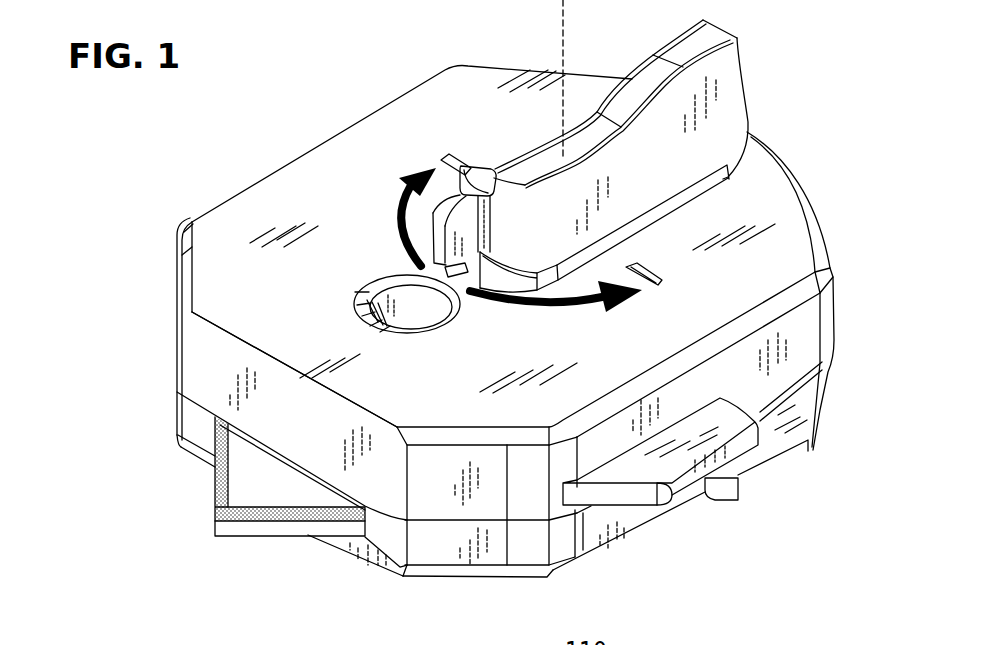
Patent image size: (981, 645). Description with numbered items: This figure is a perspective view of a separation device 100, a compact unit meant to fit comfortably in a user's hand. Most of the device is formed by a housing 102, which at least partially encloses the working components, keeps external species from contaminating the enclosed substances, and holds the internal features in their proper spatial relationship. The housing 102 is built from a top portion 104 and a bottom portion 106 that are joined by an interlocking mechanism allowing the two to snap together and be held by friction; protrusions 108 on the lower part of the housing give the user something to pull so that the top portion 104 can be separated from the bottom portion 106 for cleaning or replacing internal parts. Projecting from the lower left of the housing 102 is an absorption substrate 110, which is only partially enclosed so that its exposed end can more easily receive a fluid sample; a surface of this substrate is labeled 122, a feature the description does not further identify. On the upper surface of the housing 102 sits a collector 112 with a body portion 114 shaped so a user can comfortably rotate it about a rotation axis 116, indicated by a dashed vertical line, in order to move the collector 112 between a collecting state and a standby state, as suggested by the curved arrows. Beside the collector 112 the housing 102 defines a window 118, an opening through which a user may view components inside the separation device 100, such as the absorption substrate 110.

The separation device 100 is at (270, 112).
The housing 102 is at (146, 276).
The top portion 104 is at (424, 102).
The bottom portion 106 is at (434, 553).
The protrusions 108 is at (683, 486).
The absorption substrate 110 is at (214, 492).
The collector 112 is at (752, 80).
The body portion 114 is at (720, 113).
The rotation axis 116 is at (563, 13).
The window 118 is at (407, 300).
The tab surface 122 is at (243, 472).